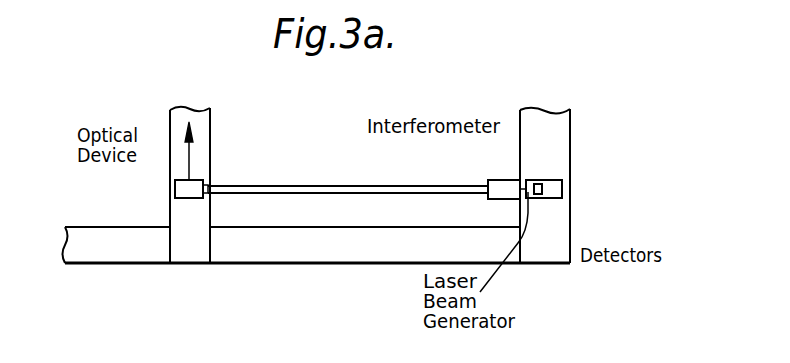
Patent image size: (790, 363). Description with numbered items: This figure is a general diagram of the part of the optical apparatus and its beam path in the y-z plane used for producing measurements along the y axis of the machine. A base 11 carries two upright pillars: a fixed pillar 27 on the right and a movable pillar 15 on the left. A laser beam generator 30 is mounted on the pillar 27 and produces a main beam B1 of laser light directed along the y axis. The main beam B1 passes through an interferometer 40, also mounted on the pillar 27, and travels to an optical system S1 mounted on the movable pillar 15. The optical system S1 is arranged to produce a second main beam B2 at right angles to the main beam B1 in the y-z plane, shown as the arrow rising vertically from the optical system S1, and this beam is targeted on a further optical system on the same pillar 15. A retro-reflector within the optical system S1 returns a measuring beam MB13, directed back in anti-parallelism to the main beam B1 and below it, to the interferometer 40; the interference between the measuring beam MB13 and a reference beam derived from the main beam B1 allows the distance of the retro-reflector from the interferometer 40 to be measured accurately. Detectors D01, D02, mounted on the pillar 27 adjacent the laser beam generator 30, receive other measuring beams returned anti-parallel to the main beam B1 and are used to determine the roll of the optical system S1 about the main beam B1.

The base 11 is at (362, 252).
The movable pillar 15 is at (192, 253).
The pillar 27 is at (565, 157).
The laser beam generator 30 is at (562, 193).
The interferometer 40 is at (497, 180).
The optical system S1 is at (175, 186).
The main beam B1 is at (350, 186).
The second main beam B2 is at (189, 162).
The measuring beam MB13 is at (352, 197).
The detector D01 is at (539, 195).
The detector D02 is at (598, 211).